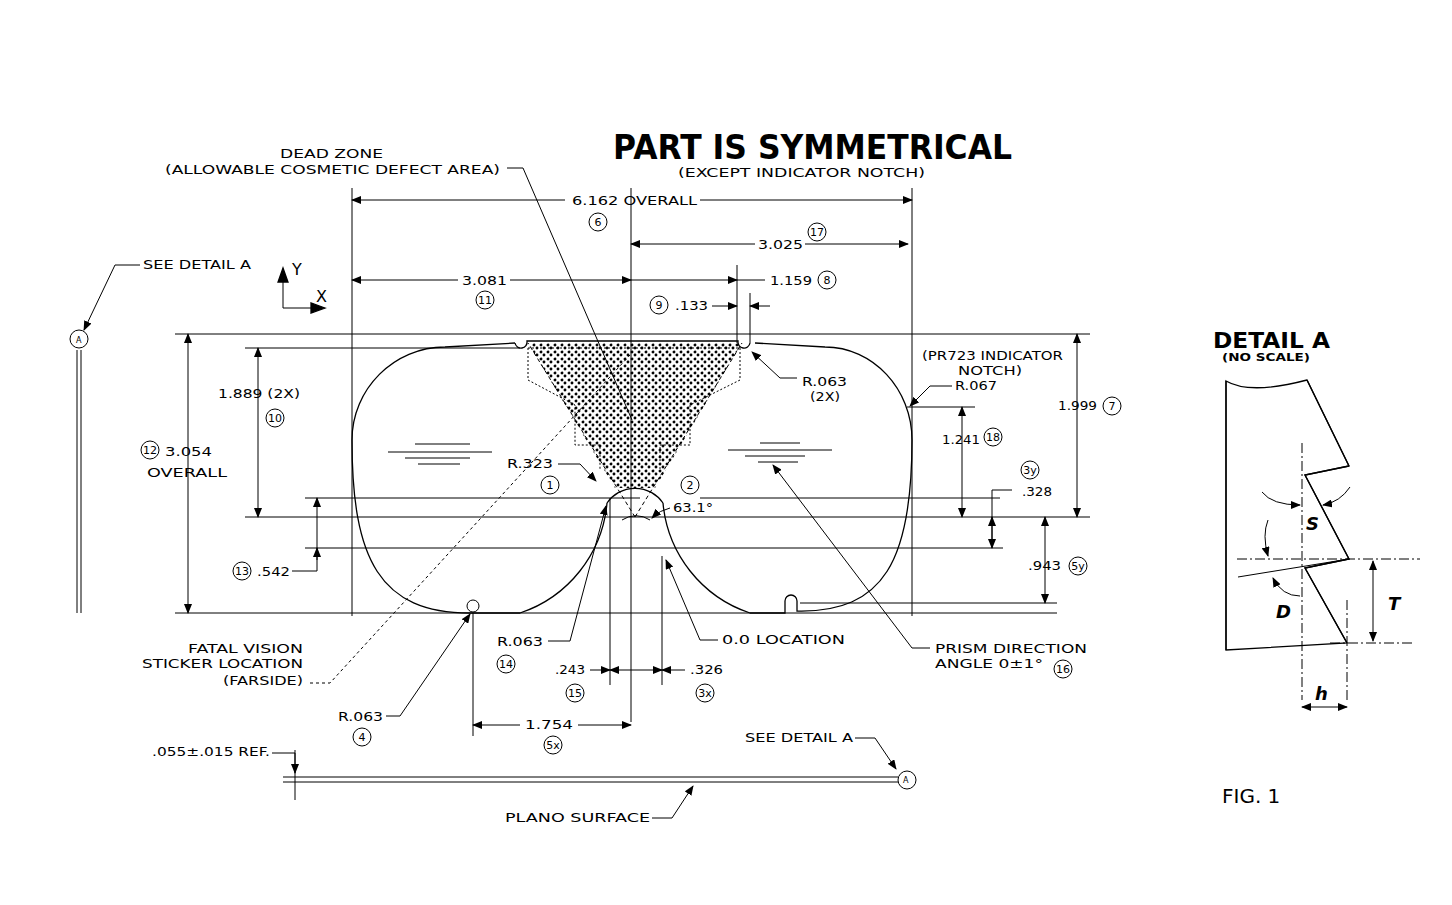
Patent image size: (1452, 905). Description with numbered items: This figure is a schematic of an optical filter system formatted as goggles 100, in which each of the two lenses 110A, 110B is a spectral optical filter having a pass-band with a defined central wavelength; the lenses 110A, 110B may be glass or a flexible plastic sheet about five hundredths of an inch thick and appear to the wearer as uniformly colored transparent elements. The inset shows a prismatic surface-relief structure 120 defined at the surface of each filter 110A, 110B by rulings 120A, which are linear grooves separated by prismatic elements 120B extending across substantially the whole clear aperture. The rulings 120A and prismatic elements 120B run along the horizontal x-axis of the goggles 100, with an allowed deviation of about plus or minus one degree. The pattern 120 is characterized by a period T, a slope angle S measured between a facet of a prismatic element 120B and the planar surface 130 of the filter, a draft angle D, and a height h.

The implementation of the optical filter system 100 is at (1042, 212).
The lens 110A is at (493, 477).
The lens 110B is at (773, 477).
The prismatic surface-relief structure 120 is at (442, 444).
The rulings 120A is at (1382, 512).
The prismatic elements 120B is at (1330, 458).
The planar surface 130 is at (1225, 608).